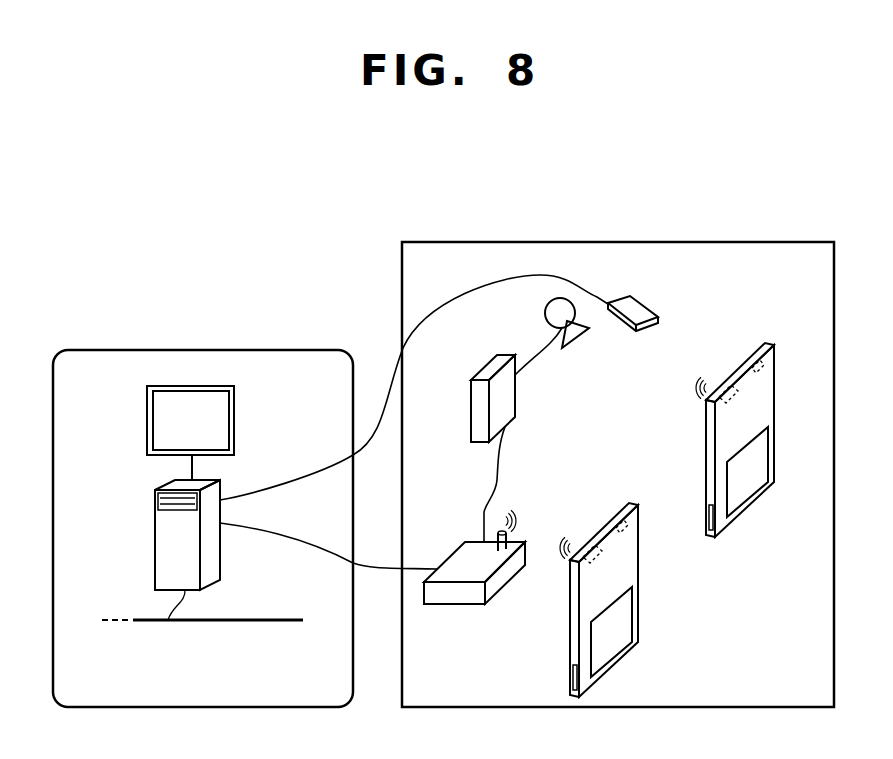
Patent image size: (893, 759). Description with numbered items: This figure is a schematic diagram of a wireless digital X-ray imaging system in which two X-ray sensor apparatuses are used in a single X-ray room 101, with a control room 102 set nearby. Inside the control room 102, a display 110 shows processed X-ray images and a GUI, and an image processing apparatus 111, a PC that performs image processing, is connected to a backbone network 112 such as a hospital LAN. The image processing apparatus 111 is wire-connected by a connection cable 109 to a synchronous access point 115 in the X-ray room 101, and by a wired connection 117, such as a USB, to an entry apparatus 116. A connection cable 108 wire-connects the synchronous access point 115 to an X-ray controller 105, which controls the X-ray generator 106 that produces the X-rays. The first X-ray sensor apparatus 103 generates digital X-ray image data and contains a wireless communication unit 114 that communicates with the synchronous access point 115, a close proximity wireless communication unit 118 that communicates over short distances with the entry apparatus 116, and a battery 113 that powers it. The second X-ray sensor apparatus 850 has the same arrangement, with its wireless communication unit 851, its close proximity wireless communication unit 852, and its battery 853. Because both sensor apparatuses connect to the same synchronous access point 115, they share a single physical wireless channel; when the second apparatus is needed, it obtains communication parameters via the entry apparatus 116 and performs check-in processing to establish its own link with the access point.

The X-ray room 101 is at (752, 242).
The control room 102 is at (305, 350).
The X-ray sensor apparatus 103 is at (770, 343).
The X-ray controller 105 is at (478, 378).
The X-ray generator 106 is at (545, 313).
The connection cable 108 is at (503, 465).
The connection cable 109 is at (375, 566).
The display 110 is at (234, 418).
The image processing apparatus 111 is at (222, 487).
The backbone network 112 is at (257, 620).
The battery 113 is at (758, 453).
The wireless communication unit 114 is at (728, 386).
The synchronous access point 115 is at (472, 542).
The entry apparatus 116 is at (668, 290).
The wired connection 117 is at (447, 306).
The close proximity wireless communication unit 118 is at (765, 361).
The X-ray sensor apparatus 850 is at (633, 503).
The wireless communication unit 851 is at (592, 546).
The close proximity wireless communication unit 852 is at (629, 526).
The battery 853 is at (623, 613).